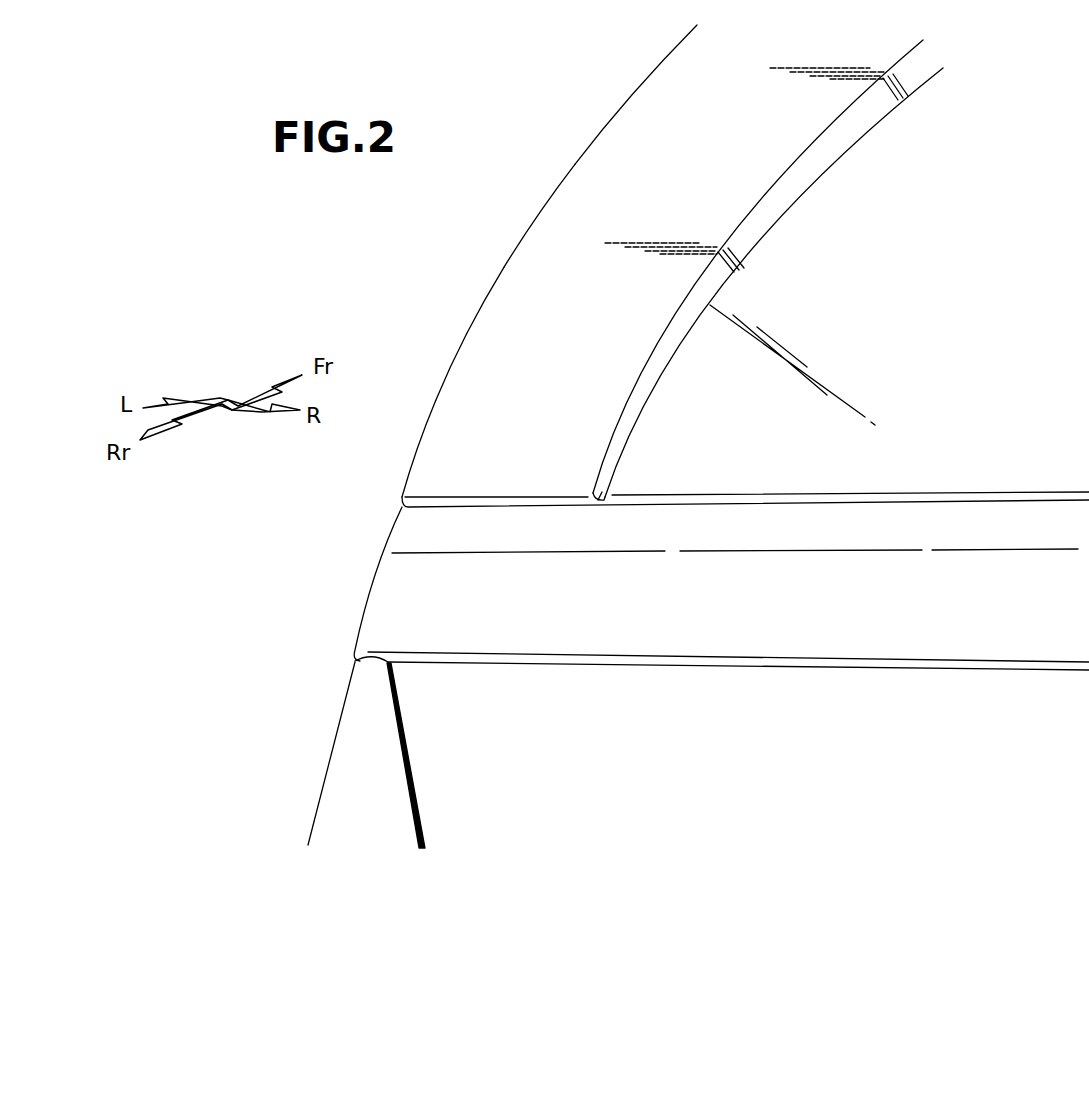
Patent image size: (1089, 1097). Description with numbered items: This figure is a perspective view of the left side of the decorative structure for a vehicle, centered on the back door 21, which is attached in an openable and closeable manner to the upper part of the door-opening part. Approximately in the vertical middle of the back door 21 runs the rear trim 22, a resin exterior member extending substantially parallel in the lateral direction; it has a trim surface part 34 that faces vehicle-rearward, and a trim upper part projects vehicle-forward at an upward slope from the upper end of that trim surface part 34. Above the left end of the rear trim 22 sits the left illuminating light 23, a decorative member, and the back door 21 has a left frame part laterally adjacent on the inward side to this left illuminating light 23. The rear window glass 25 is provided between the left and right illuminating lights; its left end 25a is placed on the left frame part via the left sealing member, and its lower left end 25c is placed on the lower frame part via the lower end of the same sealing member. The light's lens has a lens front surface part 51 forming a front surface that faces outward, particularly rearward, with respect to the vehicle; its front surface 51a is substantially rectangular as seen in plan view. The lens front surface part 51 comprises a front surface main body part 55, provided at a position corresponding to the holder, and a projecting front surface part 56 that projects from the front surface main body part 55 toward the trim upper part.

The back door 21 is at (360, 603).
The rear trim 22 is at (753, 622).
The left illuminating light 23 is at (617, 155).
The rear window glass 25 is at (912, 308).
The left end of the rear window glass 25a is at (818, 198).
The lower left end of the rear window glass 25c is at (642, 483).
The trim surface part 34 is at (910, 587).
The lens front surface part 51 is at (548, 243).
The front surface 51a is at (508, 318).
The front surface main body part 55 is at (670, 97).
The projecting front surface part 56 is at (477, 467).